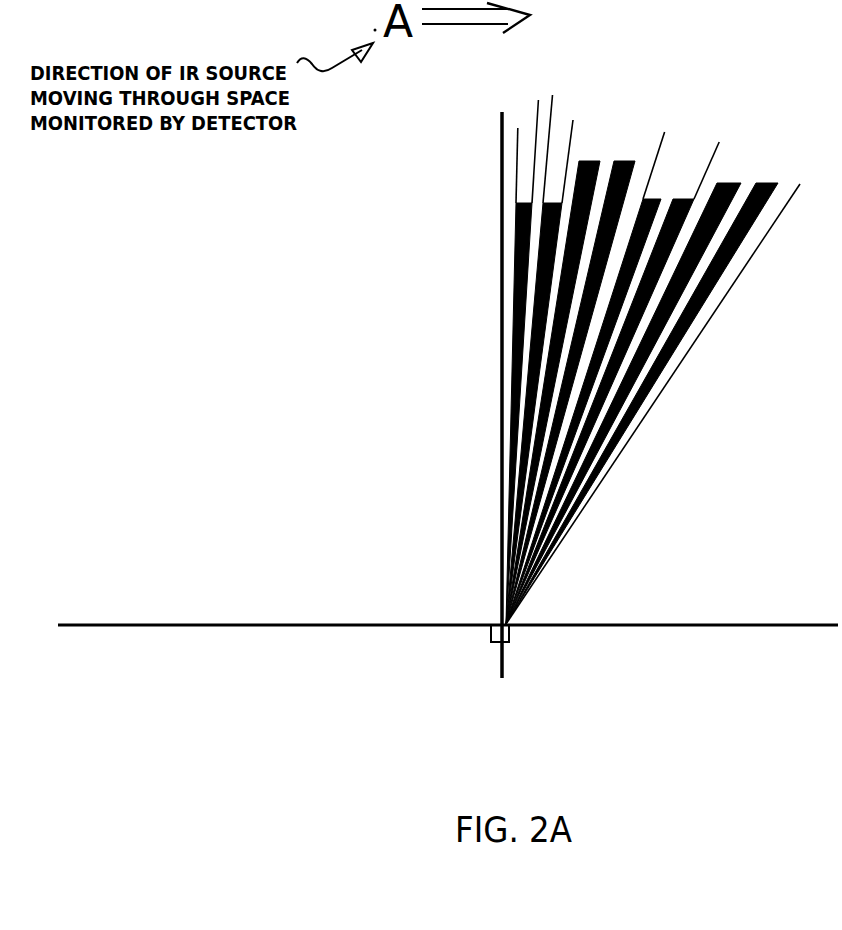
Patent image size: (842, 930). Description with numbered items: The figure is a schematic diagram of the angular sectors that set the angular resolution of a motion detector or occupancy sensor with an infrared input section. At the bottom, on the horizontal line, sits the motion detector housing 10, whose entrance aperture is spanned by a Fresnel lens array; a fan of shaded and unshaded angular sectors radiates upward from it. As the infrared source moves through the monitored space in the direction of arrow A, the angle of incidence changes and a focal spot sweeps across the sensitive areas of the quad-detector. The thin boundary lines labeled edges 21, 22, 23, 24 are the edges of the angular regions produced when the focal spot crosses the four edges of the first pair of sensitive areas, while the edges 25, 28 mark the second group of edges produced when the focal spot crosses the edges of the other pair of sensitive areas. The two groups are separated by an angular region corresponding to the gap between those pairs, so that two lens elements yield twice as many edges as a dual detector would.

The motion detector housing 10 is at (486, 646).
The edge of angular region 21 is at (518, 128).
The edge of angular region 22 is at (538, 100).
The edge of angular region 23 is at (556, 95).
The edge of angular region 24 is at (573, 123).
The edge of angular region 25 is at (665, 131).
The edge of angular region 28 is at (720, 141).